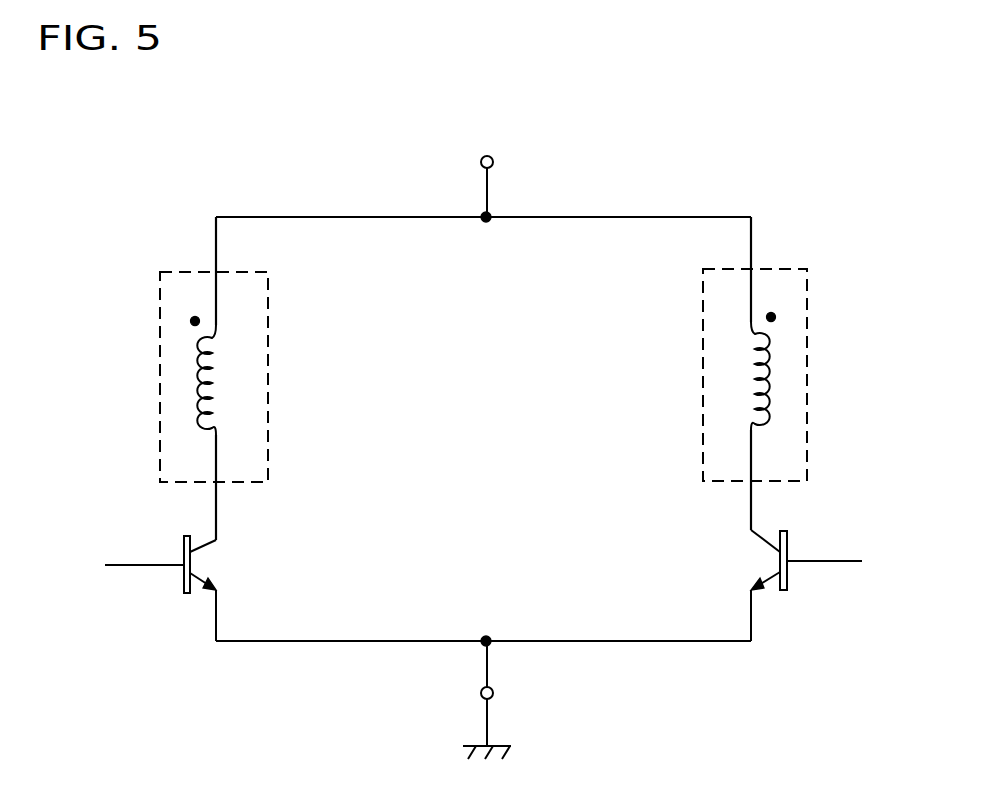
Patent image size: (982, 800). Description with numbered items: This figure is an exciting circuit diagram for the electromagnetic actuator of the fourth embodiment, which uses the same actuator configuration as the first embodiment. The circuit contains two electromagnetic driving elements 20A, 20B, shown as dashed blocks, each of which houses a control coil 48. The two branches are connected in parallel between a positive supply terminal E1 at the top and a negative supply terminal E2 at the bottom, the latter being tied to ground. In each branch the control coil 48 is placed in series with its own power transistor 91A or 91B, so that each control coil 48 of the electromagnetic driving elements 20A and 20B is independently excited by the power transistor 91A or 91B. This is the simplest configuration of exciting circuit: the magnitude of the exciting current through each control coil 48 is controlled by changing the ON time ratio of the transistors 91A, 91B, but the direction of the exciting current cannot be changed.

The electromagnetic driving element 20A is at (800, 269).
The electromagnetic driving element 20B is at (262, 273).
The control coil 48 is at (224, 378).
The power transistor 91A is at (768, 560).
The power transistor 91B is at (203, 567).
The positive power supply terminal E1 is at (494, 158).
The negative power supply terminal E2 is at (494, 690).